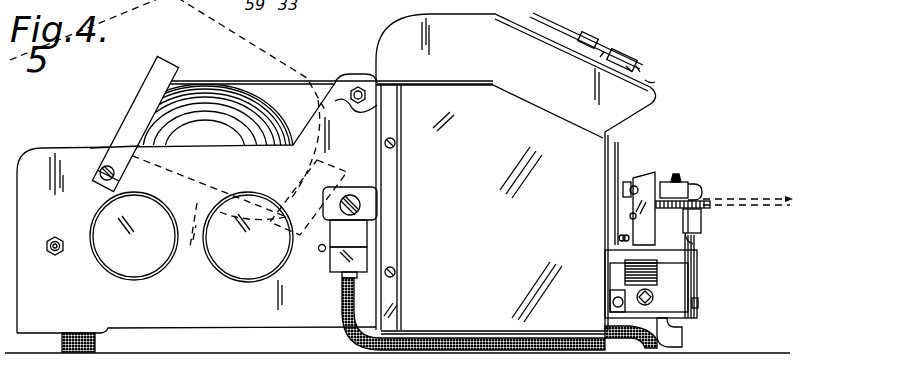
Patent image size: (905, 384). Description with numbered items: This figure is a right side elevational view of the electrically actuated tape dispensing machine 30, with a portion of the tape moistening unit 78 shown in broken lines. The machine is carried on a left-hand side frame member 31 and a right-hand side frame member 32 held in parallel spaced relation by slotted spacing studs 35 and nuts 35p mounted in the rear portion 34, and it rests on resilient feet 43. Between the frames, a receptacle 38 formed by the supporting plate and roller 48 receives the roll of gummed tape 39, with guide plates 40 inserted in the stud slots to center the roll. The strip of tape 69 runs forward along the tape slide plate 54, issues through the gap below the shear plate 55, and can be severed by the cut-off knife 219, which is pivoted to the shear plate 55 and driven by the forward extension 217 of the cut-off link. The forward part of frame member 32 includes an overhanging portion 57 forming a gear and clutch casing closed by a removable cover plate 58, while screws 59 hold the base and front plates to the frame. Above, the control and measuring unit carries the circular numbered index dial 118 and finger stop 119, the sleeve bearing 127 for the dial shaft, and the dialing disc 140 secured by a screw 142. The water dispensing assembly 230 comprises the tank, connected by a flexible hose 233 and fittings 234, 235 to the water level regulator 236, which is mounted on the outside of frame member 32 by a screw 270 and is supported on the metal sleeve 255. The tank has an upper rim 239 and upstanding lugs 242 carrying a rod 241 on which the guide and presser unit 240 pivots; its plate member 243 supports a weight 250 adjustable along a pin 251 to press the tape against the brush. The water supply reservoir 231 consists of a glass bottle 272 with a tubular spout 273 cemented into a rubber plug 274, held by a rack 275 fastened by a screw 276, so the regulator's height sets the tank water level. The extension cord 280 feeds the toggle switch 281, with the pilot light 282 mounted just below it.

The tape dispensing machine 30 is at (688, 76).
The left-hand side frame member 31 is at (397, 368).
The right-hand side frame member 32 is at (400, 42).
The rear portion 34 is at (234, 320).
The spacing stud 35 is at (65, 255).
The nut 35p is at (50, 262).
The receptacle 38 is at (150, 262).
The roll of gummed tape 39 is at (215, 100).
The guide plate 40 is at (314, 82).
The foot 43 is at (96, 342).
The roller 48 is at (322, 252).
The tape slide plate 54 is at (468, 32).
The shear plate 55 is at (640, 176).
The overhanging outwardly extending portion 57 is at (635, 112).
The removable cover plate 58 is at (475, 108).
The screw 59 is at (630, 238).
The strip of tape 69 is at (734, 200).
The tape moistening unit 78 is at (704, 279).
The circular numbered index dial 118 is at (650, 78).
The finger stop 119 is at (630, 65).
The sleeve bearing 127 is at (578, 52).
The dialing disc 140 is at (566, 31).
The screw 142 is at (598, 35).
The forward extension 217 is at (622, 187).
The cut-off knife 219 is at (612, 176).
The water dispensing assembly 230 is at (709, 243).
The water supply reservoir 231 is at (104, 80).
The flexible hose 233 is at (413, 347).
The fitting 234 is at (684, 332).
The fitting 235 is at (333, 290).
The water level regulator 236 is at (363, 243).
The upper rim 239 is at (702, 220).
The guide and presser unit 240 is at (745, 156).
The rod 241 is at (630, 216).
The upstanding lug 242 is at (633, 220).
The plate member 243 is at (672, 209).
The weight 250 is at (712, 162).
The pin 251 is at (703, 190).
The metal sleeve 255 is at (700, 302).
The screw 270 is at (348, 197).
The glass bottle 272 is at (194, 242).
The tubular spout 273 is at (357, 213).
The rubber plug 274 is at (285, 250).
The rack 275 is at (135, 108).
The screw 276 is at (98, 152).
The electrical extension cord 280 is at (625, 335).
The toggle switch 281 is at (610, 248).
The pilot light 282 is at (610, 298).